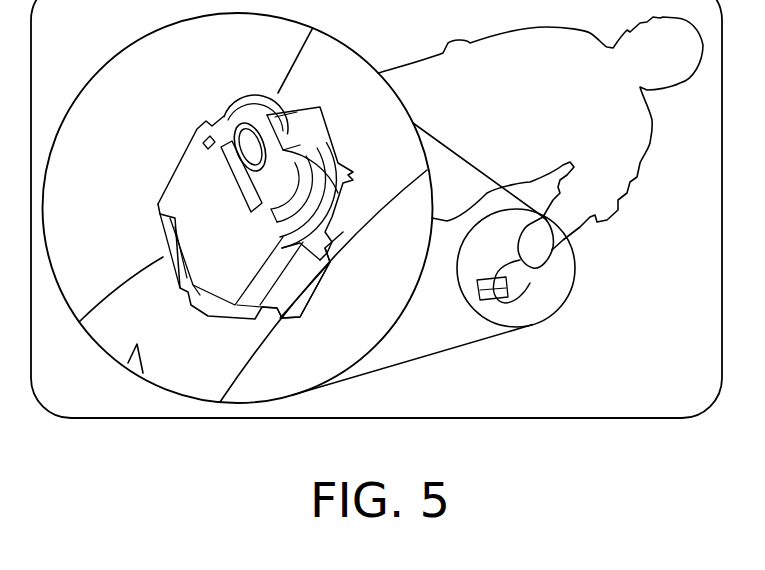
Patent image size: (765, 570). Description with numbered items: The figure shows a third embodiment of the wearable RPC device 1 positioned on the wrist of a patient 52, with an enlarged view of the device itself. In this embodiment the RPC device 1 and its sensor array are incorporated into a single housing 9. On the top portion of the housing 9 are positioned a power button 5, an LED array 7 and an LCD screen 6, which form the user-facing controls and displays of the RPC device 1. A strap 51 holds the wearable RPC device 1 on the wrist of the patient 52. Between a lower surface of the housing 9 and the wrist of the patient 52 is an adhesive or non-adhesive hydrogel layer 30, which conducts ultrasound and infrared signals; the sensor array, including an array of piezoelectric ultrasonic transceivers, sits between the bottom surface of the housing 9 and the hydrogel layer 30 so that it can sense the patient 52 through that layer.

The wearable RPC device 1 is at (153, 172).
The power button 5 is at (245, 140).
The LCD screen 6 is at (190, 180).
The LED array 7 is at (227, 127).
The housing 9 is at (158, 205).
The hydrogel layer 30 is at (342, 143).
The strap 51 is at (297, 285).
The patient 52 is at (647, 157).